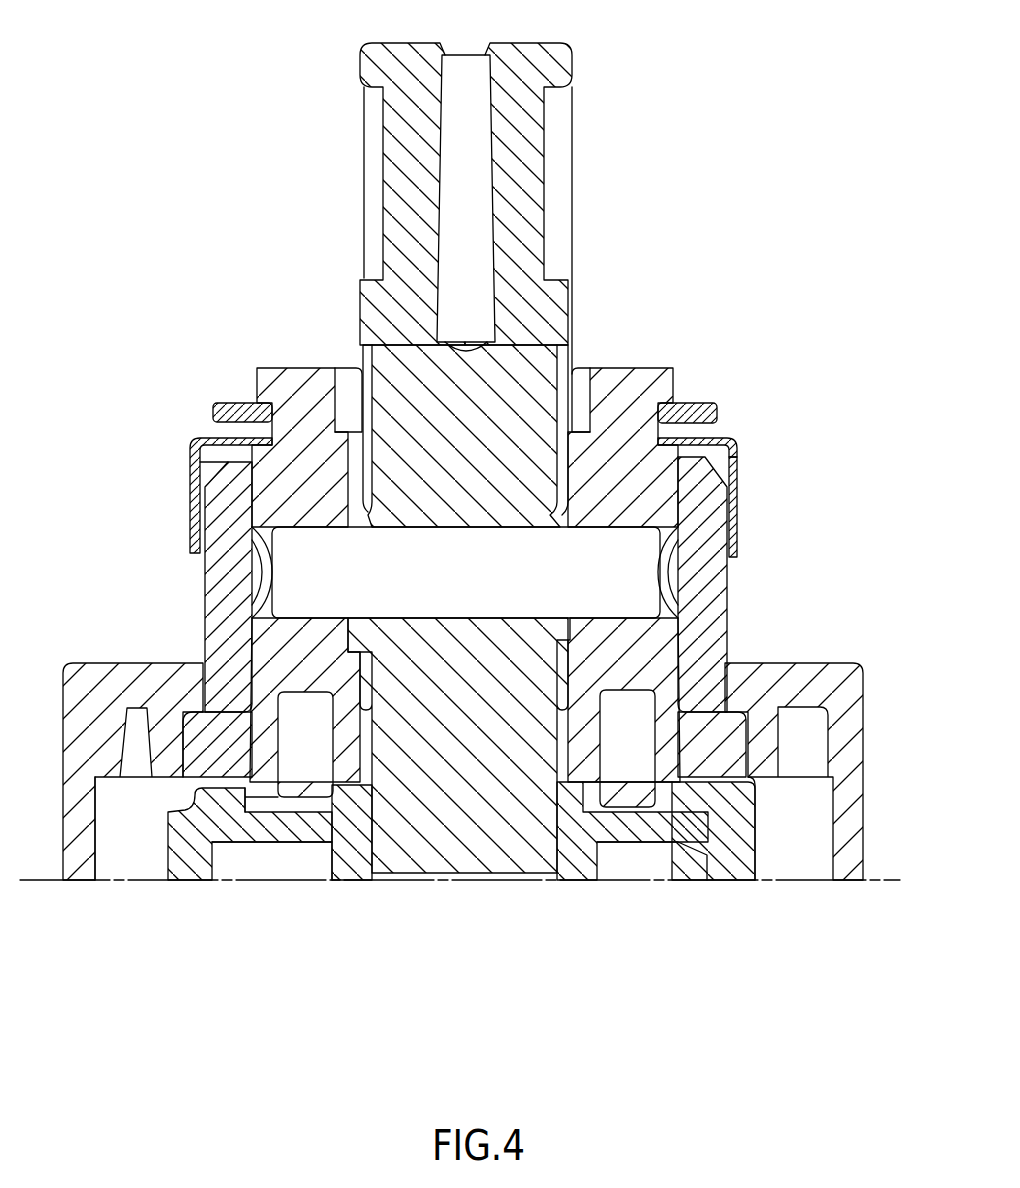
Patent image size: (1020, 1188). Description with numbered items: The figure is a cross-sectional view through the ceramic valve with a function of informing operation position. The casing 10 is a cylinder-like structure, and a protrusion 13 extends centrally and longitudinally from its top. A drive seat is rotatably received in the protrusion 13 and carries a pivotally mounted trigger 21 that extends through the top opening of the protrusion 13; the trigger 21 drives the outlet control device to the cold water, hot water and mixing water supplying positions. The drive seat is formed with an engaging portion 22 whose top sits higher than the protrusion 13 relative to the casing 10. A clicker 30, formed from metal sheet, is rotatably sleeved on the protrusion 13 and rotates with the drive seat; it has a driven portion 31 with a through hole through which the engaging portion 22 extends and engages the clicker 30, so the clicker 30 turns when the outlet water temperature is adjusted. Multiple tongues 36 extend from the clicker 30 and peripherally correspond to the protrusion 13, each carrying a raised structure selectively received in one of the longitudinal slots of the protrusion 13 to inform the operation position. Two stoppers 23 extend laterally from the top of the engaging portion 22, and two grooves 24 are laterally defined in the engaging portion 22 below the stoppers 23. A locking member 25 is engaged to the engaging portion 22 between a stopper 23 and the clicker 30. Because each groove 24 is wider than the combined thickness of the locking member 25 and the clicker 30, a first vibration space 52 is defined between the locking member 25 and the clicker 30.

The casing 10 is at (848, 690).
The protrusion 13 is at (223, 593).
The trigger 21 is at (510, 127).
The engaging portion 22 is at (620, 458).
The stoppers 23 is at (660, 383).
The grooves 24 is at (278, 398).
The locking member 25 is at (719, 409).
The clicker 30 is at (200, 440).
The driven portion 31 is at (707, 440).
The tongues 36 is at (742, 500).
The first vibration space 52 is at (236, 432).